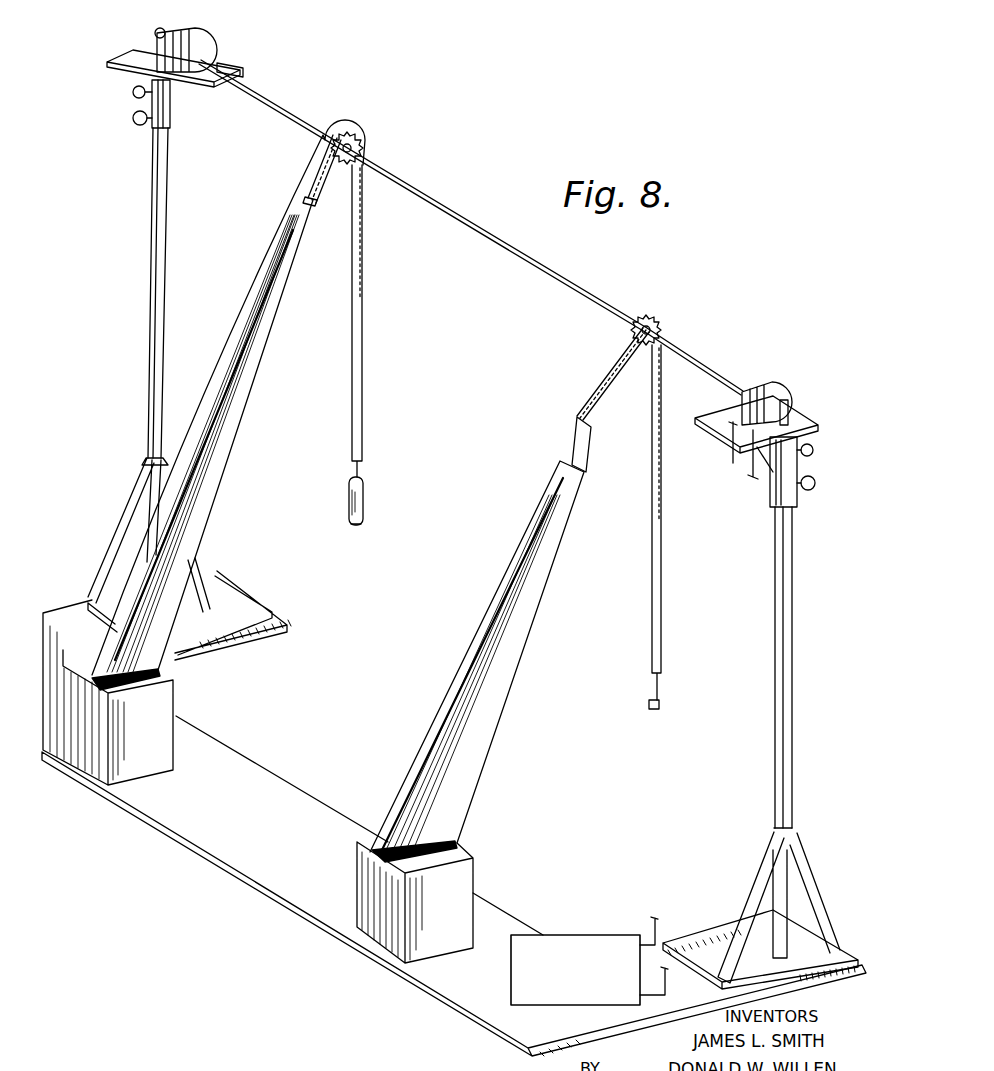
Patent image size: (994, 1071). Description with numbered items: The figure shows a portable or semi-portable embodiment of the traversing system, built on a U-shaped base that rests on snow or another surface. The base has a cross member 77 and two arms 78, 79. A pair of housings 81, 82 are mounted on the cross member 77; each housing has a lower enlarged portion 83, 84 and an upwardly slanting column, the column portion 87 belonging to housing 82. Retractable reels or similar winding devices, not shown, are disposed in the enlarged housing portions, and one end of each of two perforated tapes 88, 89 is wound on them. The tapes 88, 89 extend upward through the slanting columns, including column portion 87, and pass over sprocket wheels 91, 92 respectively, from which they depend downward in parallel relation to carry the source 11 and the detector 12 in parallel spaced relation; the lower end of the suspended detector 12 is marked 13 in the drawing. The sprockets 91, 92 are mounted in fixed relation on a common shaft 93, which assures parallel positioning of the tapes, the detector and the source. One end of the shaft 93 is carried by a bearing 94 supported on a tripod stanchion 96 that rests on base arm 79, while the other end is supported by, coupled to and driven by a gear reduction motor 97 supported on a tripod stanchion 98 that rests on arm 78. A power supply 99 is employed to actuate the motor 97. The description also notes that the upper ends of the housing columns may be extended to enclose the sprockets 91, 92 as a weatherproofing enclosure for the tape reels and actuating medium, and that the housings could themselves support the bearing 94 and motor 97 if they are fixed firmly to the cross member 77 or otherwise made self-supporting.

The source 11 is at (658, 707).
The detector 12 is at (363, 491).
The weight bottom 13 is at (360, 526).
The cross member 77 is at (274, 784).
The arm 78 is at (707, 914).
The arm 79 is at (272, 621).
The housing 81 is at (486, 585).
The housing 82 is at (222, 507).
The lower enlarged portion 83 is at (474, 856).
The lower enlarged portion 84 is at (171, 699).
The column portion 87 is at (227, 433).
The perforated tape 88 is at (598, 386).
The perforated tape 89 is at (353, 397).
The sprocket wheel 91 is at (661, 325).
The sprocket wheel 92 is at (366, 136).
The shaft 93 is at (432, 203).
The bearing 94 is at (199, 33).
The tripod stanchion 96 is at (150, 427).
The gear reduction motor 97 is at (778, 392).
The tripod stanchion 98 is at (795, 556).
The power supply 99 is at (578, 934).